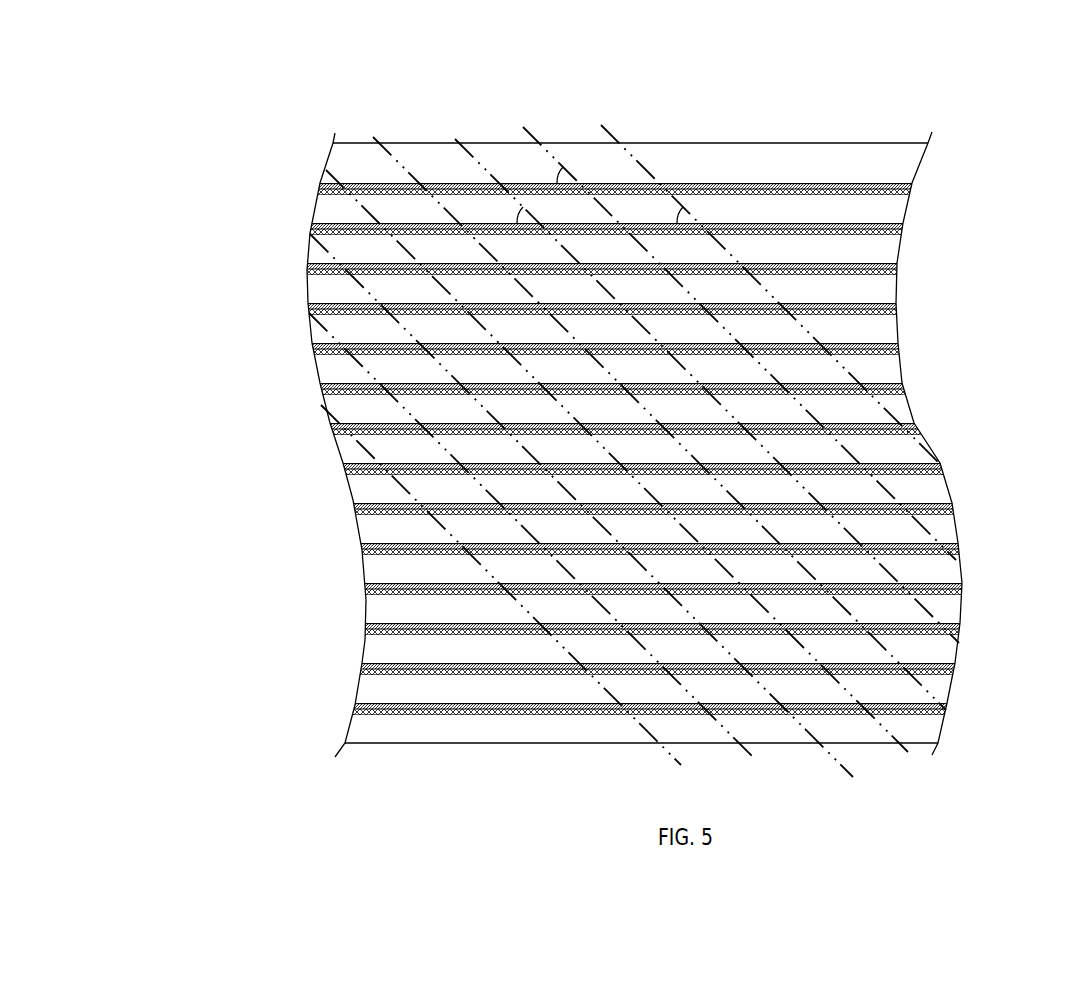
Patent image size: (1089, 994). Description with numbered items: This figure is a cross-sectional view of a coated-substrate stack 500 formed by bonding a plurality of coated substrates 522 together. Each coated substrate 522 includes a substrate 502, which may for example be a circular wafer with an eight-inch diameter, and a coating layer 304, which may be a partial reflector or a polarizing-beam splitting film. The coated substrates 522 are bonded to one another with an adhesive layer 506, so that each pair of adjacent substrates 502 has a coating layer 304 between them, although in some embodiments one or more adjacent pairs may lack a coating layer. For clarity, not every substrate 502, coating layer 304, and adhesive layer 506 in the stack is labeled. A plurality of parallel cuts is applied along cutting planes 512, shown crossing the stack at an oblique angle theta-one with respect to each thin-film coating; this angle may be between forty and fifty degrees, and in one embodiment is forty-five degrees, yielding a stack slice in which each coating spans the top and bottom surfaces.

The coated-substrate stack 500 is at (615, 439).
The cutting planes 512 is at (601, 125).
The adhesive layer 506 is at (308, 351).
The substrate 502 is at (352, 378).
The coating layer 304 is at (328, 426).
The coated substrate 522 is at (957, 712).